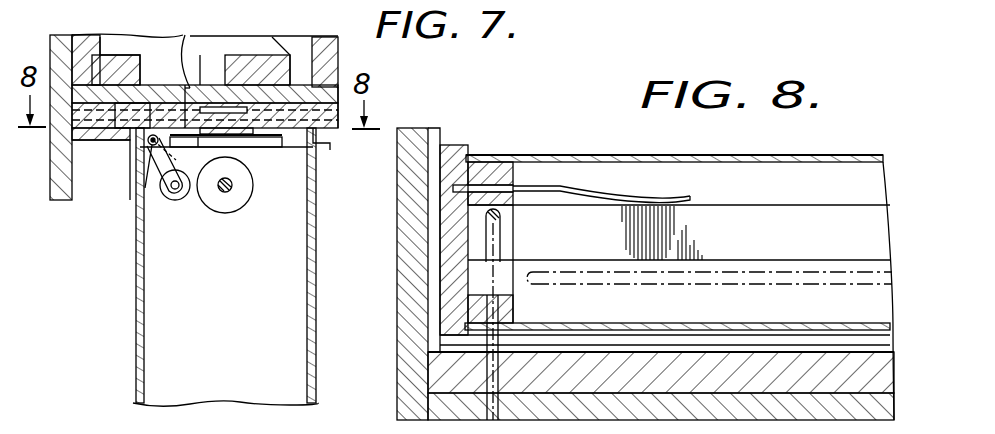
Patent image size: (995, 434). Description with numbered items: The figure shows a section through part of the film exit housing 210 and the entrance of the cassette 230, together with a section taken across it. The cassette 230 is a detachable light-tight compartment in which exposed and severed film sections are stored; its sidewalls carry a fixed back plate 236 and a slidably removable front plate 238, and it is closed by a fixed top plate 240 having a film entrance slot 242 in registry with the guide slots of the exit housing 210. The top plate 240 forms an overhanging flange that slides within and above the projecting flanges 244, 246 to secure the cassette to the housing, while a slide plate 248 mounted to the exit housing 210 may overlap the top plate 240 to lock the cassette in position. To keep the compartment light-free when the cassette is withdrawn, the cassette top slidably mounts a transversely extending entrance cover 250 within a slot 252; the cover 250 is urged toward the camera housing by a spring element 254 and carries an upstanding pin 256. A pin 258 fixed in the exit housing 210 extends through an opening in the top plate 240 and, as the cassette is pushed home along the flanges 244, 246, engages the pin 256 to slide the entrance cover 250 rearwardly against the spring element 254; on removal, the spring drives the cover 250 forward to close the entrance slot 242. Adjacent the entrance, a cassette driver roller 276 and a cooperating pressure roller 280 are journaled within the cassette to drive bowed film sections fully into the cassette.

In FIG. 7, the film exit housing 210 is at (328, 33).
In FIG. 7, the cassette 230 is at (130, 309).
In FIG. 8, the cassette 230 is at (586, 140).
In FIG. 7, the back plate 236 is at (307, 303).
In FIG. 8, the back plate 236 is at (697, 155).
In FIG. 7, the front plate 238 is at (136, 268).
In FIG. 8, the front plate 238 is at (777, 328).
In FIG. 7, the top plate 240 is at (265, 104).
In FIG. 8, the top plate 240 is at (493, 166).
In FIG. 7, the film entrance slot 242 is at (189, 86).
In FIG. 8, the film entrance slot 242 is at (706, 278).
In FIG. 8, the projecting flange 244 is at (441, 142).
In FIG. 7, the projecting flange 246 is at (121, 147).
In FIG. 8, the projecting flange 246 is at (630, 346).
In FIG. 7, the slide plate 248 is at (338, 129).
In FIG. 7, the entrance cover 250 is at (248, 149).
In FIG. 8, the entrance cover 250 is at (742, 213).
In FIG. 8, the slot 252 is at (470, 284).
In FIG. 7, the spring element 254 is at (330, 151).
In FIG. 8, the spring element 254 is at (591, 199).
In FIG. 7, the pin 256 is at (246, 117).
In FIG. 8, the pin 256 is at (501, 217).
In FIG. 7, the pin 258 is at (92, 110).
In FIG. 8, the pin 258 is at (502, 378).
In FIG. 7, the cassette driver roller 276 is at (243, 206).
In FIG. 7, the pressure roller 280 is at (182, 201).